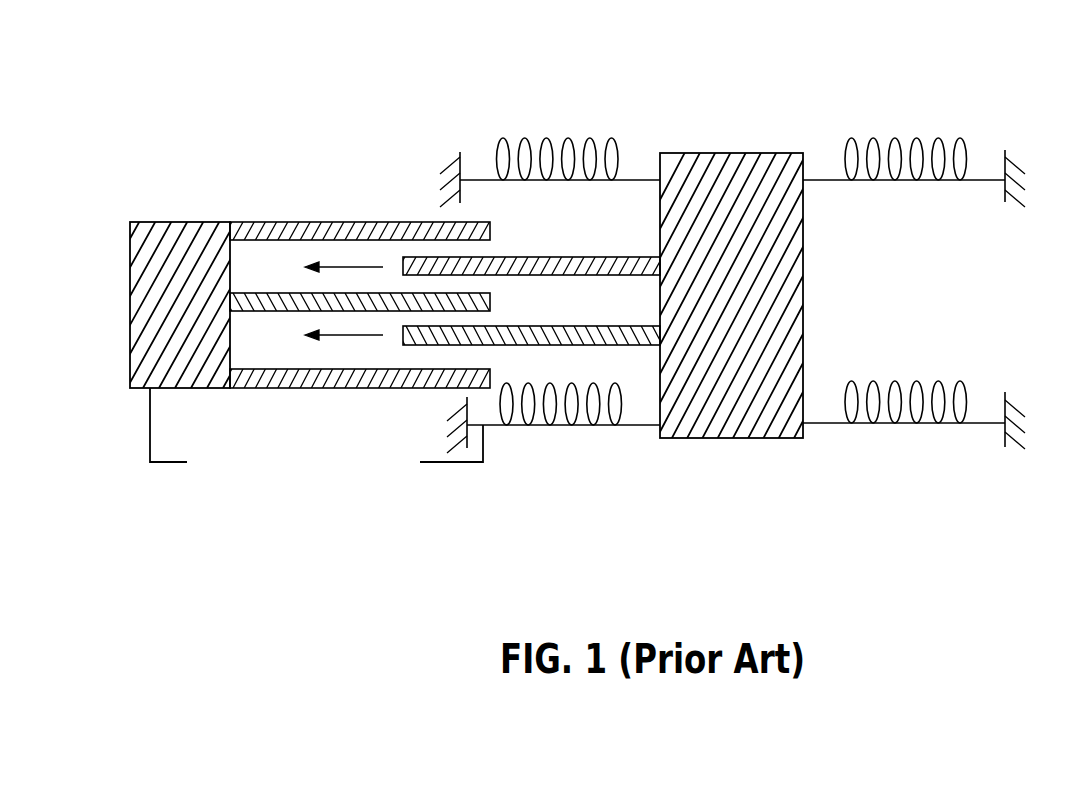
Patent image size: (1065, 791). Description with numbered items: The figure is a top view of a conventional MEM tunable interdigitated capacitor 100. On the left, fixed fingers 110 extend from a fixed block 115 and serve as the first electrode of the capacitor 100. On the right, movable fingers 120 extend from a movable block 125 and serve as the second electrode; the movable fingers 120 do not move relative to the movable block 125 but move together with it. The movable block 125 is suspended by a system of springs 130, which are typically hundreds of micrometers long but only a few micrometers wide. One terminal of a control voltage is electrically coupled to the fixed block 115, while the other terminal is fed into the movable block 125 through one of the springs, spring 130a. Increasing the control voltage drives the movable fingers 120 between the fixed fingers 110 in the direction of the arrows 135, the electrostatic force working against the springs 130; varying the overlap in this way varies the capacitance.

The tunable interdigitated capacitor 100 is at (672, 36).
The fixed fingers 110 is at (294, 221).
The fixed block 115 is at (165, 210).
The movable fingers 120 is at (602, 277).
The movable block 125 is at (723, 140).
The springs 130 is at (502, 140).
The spring 130a is at (600, 426).
The arrows 135 is at (344, 267).